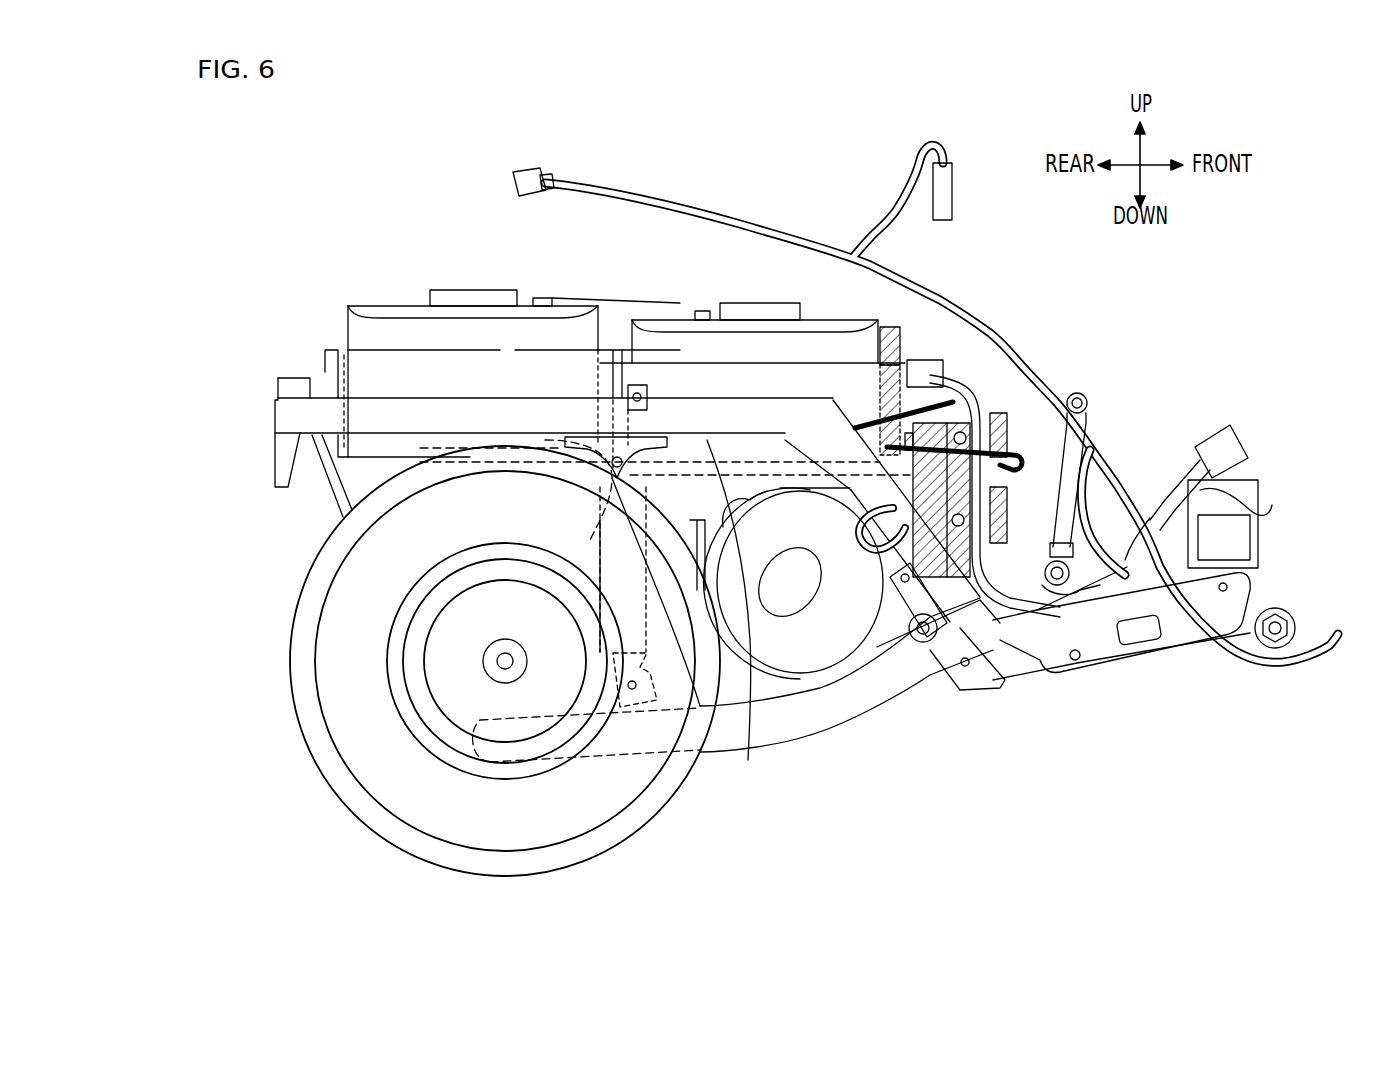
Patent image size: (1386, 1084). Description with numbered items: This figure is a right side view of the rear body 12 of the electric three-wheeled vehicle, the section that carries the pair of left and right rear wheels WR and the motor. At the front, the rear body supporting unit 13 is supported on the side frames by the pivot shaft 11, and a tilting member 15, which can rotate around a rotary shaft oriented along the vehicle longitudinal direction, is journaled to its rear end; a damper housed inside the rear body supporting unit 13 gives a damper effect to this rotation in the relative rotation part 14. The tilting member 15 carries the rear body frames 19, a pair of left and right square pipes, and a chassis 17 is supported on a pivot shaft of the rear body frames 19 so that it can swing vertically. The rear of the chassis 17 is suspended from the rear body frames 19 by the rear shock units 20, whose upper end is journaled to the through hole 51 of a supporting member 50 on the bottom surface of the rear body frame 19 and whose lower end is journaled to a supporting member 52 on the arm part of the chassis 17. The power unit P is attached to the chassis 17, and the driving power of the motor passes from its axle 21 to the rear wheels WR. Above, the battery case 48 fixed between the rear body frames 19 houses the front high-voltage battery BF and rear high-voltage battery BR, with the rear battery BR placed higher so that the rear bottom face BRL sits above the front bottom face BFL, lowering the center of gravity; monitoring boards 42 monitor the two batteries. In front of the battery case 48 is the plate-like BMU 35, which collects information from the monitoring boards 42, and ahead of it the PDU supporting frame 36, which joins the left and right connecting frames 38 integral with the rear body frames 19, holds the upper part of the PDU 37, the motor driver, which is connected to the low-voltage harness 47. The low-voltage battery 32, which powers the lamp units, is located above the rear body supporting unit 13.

The pivot shaft 11 is at (1295, 627).
The rear body 12 is at (438, 178).
The rear body supporting unit 13 is at (1140, 668).
The relative rotation part 14 is at (1000, 682).
The tilting member 15 is at (965, 688).
The chassis 17 is at (780, 725).
The rear body frames 19 is at (440, 415).
The rear shock units 20 is at (592, 540).
The axle 21 is at (490, 663).
The low-voltage battery 32 is at (1260, 492).
The BMU 35 is at (890, 340).
The PDU supporting frame 36 is at (870, 430).
The PDU 37 is at (1002, 400).
The connecting frames 38 is at (883, 500).
The monitoring boards 42 is at (485, 296).
The low-voltage harness 47 is at (1000, 325).
The battery case 48 is at (345, 370).
The supporting member 50 is at (643, 463).
The through hole 51 is at (612, 470).
The supporting member 52 is at (712, 470).
The rear high-voltage battery BR is at (388, 330).
The front high-voltage battery BF is at (700, 338).
The rear bottom face BRL is at (420, 460).
The front bottom face BFL is at (748, 760).
The power unit P is at (801, 640).
The rear wheels WR is at (375, 820).